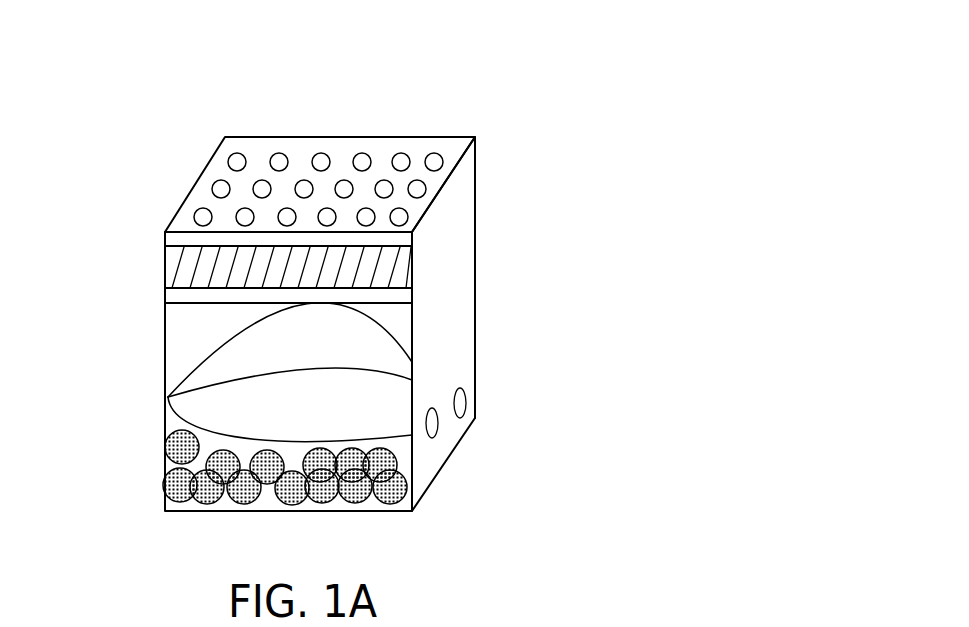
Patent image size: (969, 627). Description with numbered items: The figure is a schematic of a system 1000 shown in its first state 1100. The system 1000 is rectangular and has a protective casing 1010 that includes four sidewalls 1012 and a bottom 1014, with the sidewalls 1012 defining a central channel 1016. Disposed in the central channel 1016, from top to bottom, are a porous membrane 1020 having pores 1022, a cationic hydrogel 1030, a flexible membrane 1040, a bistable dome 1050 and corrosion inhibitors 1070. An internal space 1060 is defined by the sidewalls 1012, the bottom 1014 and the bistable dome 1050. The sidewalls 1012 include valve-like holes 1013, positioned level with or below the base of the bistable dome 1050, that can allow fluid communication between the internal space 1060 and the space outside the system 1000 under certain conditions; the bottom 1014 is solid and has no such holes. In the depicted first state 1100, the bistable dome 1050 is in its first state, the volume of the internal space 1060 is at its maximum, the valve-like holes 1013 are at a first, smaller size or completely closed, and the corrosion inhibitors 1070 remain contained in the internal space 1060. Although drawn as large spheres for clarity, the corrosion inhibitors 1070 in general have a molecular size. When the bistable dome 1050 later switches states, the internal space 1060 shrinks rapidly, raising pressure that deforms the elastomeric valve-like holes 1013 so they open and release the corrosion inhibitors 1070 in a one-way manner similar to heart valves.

The system 1000 is at (550, 70).
The first state 1100 is at (165, 161).
The protective casing 1010 is at (163, 352).
The sidewalls 1012 is at (460, 208).
The valve-like holes 1013 is at (467, 402).
The bottom 1014 is at (432, 483).
The central channel 1016 is at (398, 323).
The porous membrane 1020 is at (163, 239).
The pores 1022 is at (361, 153).
The cationic hydrogel 1030 is at (168, 270).
The flexible membrane 1040 is at (163, 296).
The bistable dome 1050 is at (197, 408).
The internal space 1060 is at (268, 511).
The corrosion inhibitors 1070 is at (172, 487).